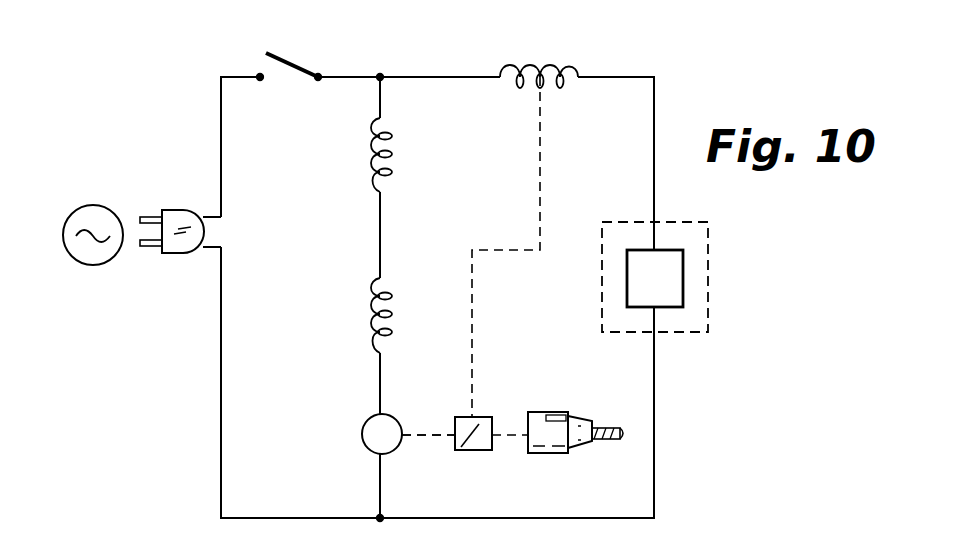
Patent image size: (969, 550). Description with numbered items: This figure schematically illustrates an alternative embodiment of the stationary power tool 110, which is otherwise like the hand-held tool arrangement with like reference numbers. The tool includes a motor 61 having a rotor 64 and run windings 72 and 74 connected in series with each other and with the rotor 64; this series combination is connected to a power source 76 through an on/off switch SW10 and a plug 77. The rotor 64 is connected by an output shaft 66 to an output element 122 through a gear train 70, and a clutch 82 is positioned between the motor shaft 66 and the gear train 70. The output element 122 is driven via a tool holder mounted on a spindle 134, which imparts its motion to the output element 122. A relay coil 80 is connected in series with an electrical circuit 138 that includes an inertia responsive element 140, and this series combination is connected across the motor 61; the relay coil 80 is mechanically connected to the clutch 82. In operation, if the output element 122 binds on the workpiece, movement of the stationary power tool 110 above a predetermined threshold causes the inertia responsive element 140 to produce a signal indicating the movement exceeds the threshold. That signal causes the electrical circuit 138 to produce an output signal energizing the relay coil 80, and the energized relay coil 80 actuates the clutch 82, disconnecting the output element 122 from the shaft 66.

The stationary power tool 110 is at (176, 377).
The motor 61 is at (330, 241).
The on/off switch SW10 is at (297, 55).
The run winding 74 is at (368, 136).
The run winding 72 is at (365, 305).
The relay coil 80 is at (567, 63).
The power source 76 is at (95, 265).
The plug 77 is at (184, 212).
The rotor 64 is at (363, 442).
The output shaft 66 is at (431, 430).
The clutch 82 is at (459, 448).
The gear train 70 is at (552, 412).
The spindle 134 is at (586, 418).
The output element 122 is at (612, 442).
The electrical circuit 138 is at (600, 296).
The inertia responsive element 140 is at (670, 270).